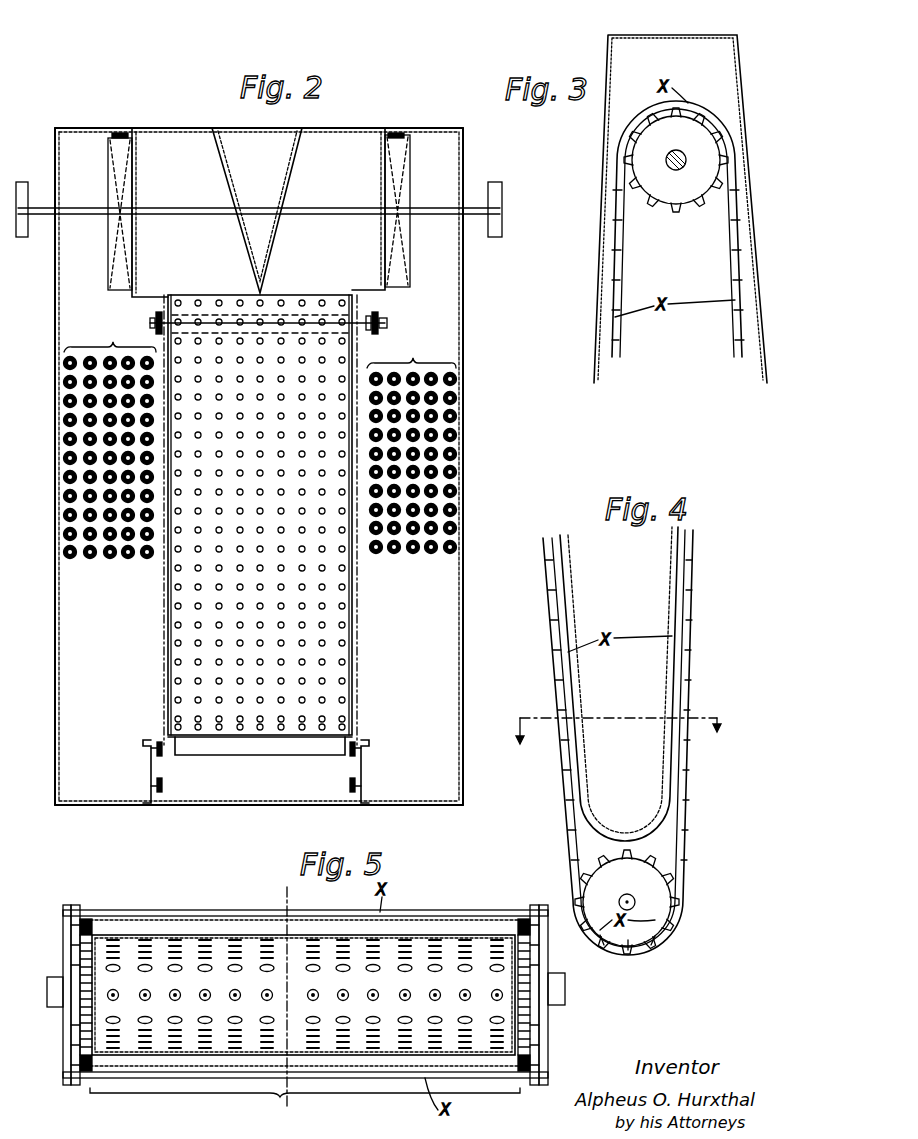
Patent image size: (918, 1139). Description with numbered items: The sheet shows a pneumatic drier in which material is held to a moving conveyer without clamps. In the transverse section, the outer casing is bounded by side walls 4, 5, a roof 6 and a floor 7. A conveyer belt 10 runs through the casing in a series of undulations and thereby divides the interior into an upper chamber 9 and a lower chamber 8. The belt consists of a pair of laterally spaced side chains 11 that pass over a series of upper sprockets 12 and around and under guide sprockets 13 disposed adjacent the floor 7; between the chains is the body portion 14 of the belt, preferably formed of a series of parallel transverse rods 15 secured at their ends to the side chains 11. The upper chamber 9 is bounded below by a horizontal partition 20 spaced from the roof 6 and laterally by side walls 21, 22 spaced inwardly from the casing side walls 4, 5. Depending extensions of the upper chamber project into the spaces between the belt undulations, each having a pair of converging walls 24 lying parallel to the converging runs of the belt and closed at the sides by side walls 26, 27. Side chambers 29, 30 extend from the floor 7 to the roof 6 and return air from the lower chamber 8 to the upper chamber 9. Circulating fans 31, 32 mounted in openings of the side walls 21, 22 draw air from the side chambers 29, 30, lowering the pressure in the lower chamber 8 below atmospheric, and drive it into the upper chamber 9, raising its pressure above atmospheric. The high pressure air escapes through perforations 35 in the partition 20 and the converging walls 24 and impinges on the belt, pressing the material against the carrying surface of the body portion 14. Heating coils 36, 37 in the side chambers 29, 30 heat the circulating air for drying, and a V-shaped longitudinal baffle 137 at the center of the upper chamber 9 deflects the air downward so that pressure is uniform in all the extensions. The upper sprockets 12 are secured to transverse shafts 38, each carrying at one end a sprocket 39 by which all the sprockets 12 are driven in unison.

In FIG. 2, the side wall 4 is at (56, 640).
In FIG. 2, the side wall 5 is at (464, 548).
In FIG. 4, the side wall 5 is at (622, 742).
In FIG. 2, the roof 6 is at (345, 128).
In FIG. 2, the floor 7 is at (90, 805).
In FIG. 2, the lower chamber 8 is at (260, 760).
In FIG. 2, the upper chamber 9 is at (307, 265).
In FIG. 3, the conveyer belt 10 is at (729, 246).
In FIG. 2, the side chains 11 is at (150, 325).
In FIG. 3, the side chains 11 is at (618, 303).
In FIG. 4, the side chains 11 is at (684, 838).
In FIG. 5, the side chains 11 is at (72, 905).
In FIG. 2, the upper sprockets 12 is at (160, 322).
In FIG. 3, the upper sprockets 12 is at (685, 190).
In FIG. 2, the guide sprockets 13 is at (165, 755).
In FIG. 4, the guide sprockets 13 is at (660, 906).
In FIG. 5, the guide sprockets 13 is at (63, 966).
In FIG. 5, the body portion 14 is at (305, 1000).
In FIG. 3, the rods 15 is at (617, 332).
In FIG. 4, the rods 15 is at (565, 798).
In FIG. 5, the rods 15 is at (180, 911).
In FIG. 2, the horizontal partition 20 is at (146, 296).
In FIG. 3, the horizontal partition 20 is at (666, 37).
In FIG. 2, the side wall 21 is at (132, 138).
In FIG. 2, the side wall 22 is at (384, 133).
In FIG. 3, the converging walls 24 is at (600, 318).
In FIG. 4, the converging walls 24 is at (672, 584).
In FIG. 5, the converging walls 24 is at (318, 935).
In FIG. 2, the side wall 26 is at (168, 616).
In FIG. 2, the side wall 27 is at (352, 604).
In FIG. 2, the side chamber 29 is at (109, 679).
In FIG. 2, the side chamber 30 is at (402, 665).
In FIG. 2, the circulating fan 31 is at (130, 246).
In FIG. 2, the circulating fan 32 is at (388, 226).
In FIG. 3, the perforations 35 is at (630, 37).
In FIG. 4, the perforations 35 is at (668, 703).
In FIG. 2, the heating coil 36 is at (110, 439).
In FIG. 2, the heating coil 37 is at (412, 447).
In FIG. 2, the shaft 38 is at (388, 324).
In FIG. 3, the shaft 38 is at (676, 150).
In FIG. 2, the sprocket 39 is at (378, 318).
In FIG. 2, the longitudinal baffle 137 is at (284, 176).